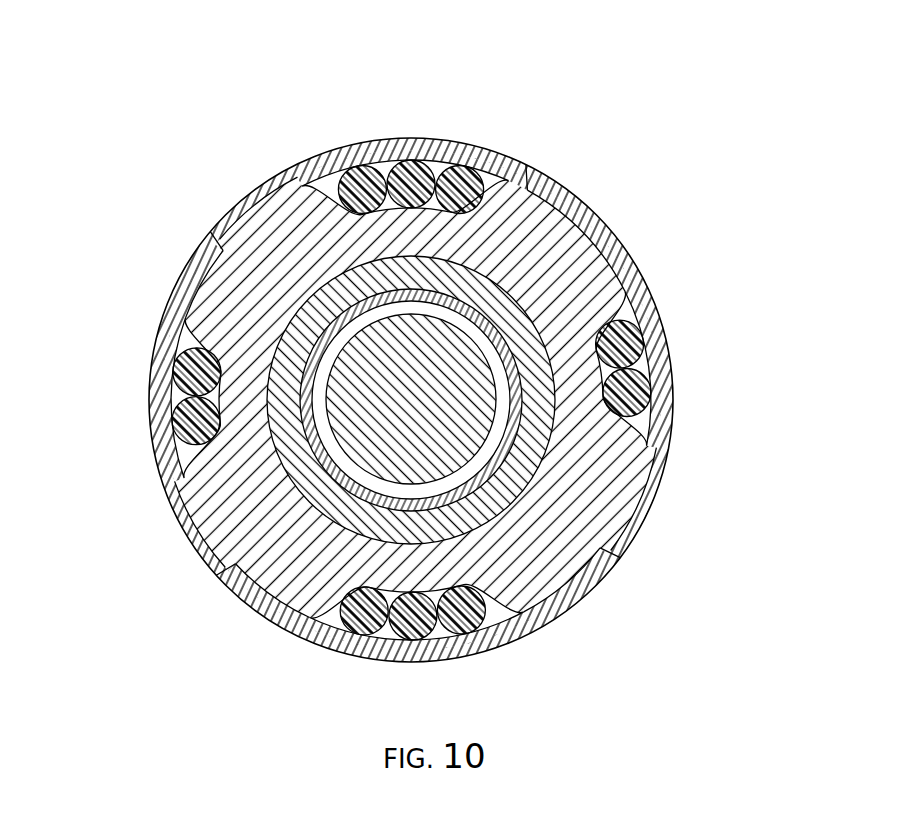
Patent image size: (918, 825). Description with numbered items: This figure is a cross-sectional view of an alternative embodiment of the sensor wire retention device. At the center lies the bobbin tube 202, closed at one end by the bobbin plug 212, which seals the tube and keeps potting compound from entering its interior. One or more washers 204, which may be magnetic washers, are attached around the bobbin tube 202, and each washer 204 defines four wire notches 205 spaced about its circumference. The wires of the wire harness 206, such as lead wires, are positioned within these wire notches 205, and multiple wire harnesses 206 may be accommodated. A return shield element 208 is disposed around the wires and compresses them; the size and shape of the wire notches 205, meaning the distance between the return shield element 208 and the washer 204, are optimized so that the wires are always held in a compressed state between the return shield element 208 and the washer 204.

The bobbin tube 202 is at (264, 301).
The washer 204 is at (614, 487).
The wire notch 205 is at (508, 181).
The wire harness 206 is at (446, 169).
The return shield element 208 is at (672, 376).
The bobbin plug 212 is at (476, 430).